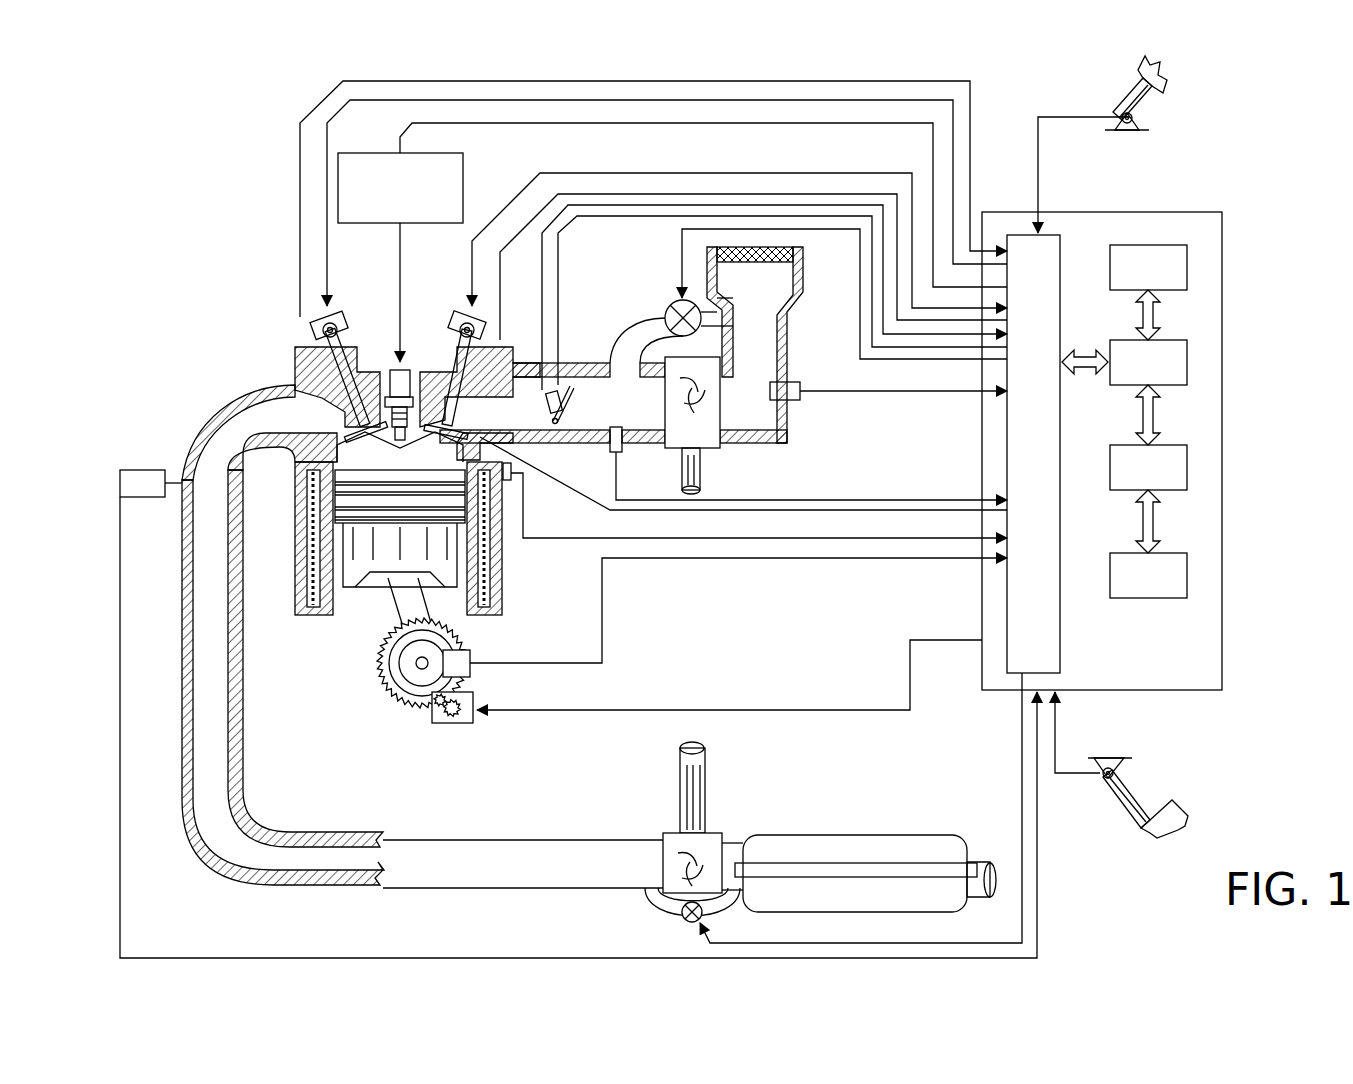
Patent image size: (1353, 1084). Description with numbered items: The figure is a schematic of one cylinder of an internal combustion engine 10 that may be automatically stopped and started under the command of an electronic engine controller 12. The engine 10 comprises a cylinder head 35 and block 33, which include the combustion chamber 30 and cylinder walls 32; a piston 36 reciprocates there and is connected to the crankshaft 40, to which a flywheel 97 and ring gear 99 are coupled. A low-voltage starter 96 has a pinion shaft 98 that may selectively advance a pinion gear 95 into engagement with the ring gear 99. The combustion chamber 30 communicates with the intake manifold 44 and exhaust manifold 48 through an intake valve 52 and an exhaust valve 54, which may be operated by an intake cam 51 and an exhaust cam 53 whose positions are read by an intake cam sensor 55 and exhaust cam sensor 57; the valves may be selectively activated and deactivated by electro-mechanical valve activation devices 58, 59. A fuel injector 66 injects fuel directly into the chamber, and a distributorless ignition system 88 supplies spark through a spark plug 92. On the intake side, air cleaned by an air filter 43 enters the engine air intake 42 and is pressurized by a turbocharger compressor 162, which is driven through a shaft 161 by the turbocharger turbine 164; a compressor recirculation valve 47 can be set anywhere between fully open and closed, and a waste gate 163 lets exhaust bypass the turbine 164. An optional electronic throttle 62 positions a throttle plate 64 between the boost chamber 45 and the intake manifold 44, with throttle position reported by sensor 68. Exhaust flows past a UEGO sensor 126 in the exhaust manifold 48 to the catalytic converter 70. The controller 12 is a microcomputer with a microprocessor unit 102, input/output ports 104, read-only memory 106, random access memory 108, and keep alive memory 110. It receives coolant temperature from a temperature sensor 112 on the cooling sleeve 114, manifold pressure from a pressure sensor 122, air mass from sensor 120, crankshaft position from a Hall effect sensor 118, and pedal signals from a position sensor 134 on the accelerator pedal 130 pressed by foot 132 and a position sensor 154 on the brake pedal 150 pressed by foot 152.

The internal combustion engine 10 is at (225, 300).
The electronic engine controller 12 is at (1224, 214).
The combustion chamber 30 is at (397, 452).
The cylinder walls 32 is at (333, 605).
The block 33 is at (292, 494).
The cylinder head 35 is at (293, 347).
The piston 36 is at (382, 560).
The crankshaft 40 is at (402, 698).
The engine air intake 42 is at (633, 276).
The air filter 43 is at (760, 262).
The intake manifold 44 is at (538, 416).
The boost chamber 45 is at (641, 416).
The compressor recirculation valve 47 is at (676, 302).
The exhaust manifold 48 is at (274, 426).
The intake cam 51 is at (462, 316).
The intake valve 52 is at (445, 414).
The exhaust cam 53 is at (332, 316).
The exhaust valve 54 is at (335, 412).
The intake cam sensor 55 is at (487, 334).
The exhaust cam sensor 57 is at (322, 332).
The valve activation device 58 is at (340, 330).
The valve activation device 59 is at (460, 332).
The electronic throttle 62 is at (572, 398).
The throttle plate 64 is at (560, 420).
The fuel injector 66 is at (512, 462).
The throttle position sensor 68 is at (548, 392).
The catalytic converter 70 is at (785, 835).
The distributorless ignition system 88 is at (357, 153).
The spark plug 92 is at (412, 345).
The pinion gear 95 is at (456, 722).
The starter 96 is at (467, 724).
The flywheel 97 is at (390, 678).
The pinion shaft 98 is at (443, 722).
The ring gear 99 is at (413, 705).
The microprocessor unit 102 is at (1190, 364).
The input/output ports 104 is at (1062, 247).
The read-only memory 106 is at (1190, 262).
The random access memory 108 is at (1190, 470).
The keep alive memory 110 is at (1190, 578).
The temperature sensor 112 is at (511, 478).
The cooling sleeve 114 is at (505, 580).
The Hall effect sensor 118 is at (470, 655).
The air mass sensor 120 is at (798, 383).
The pressure sensor 122 is at (610, 448).
The Universal Exhaust Gas Oxygen (UEGO) sensor 126 is at (120, 478).
The accelerator pedal 130 is at (1112, 98).
The foot 132 is at (1163, 80).
The position sensor 134 is at (1135, 118).
The brake pedal 150 is at (1138, 826).
The foot 152 is at (1175, 800).
The position sensor 154 is at (1100, 768).
The shaft 161 is at (680, 478).
The turbocharger compressor 162 is at (706, 445).
The waste gate 163 is at (685, 925).
The turbocharger turbine 164 is at (665, 833).